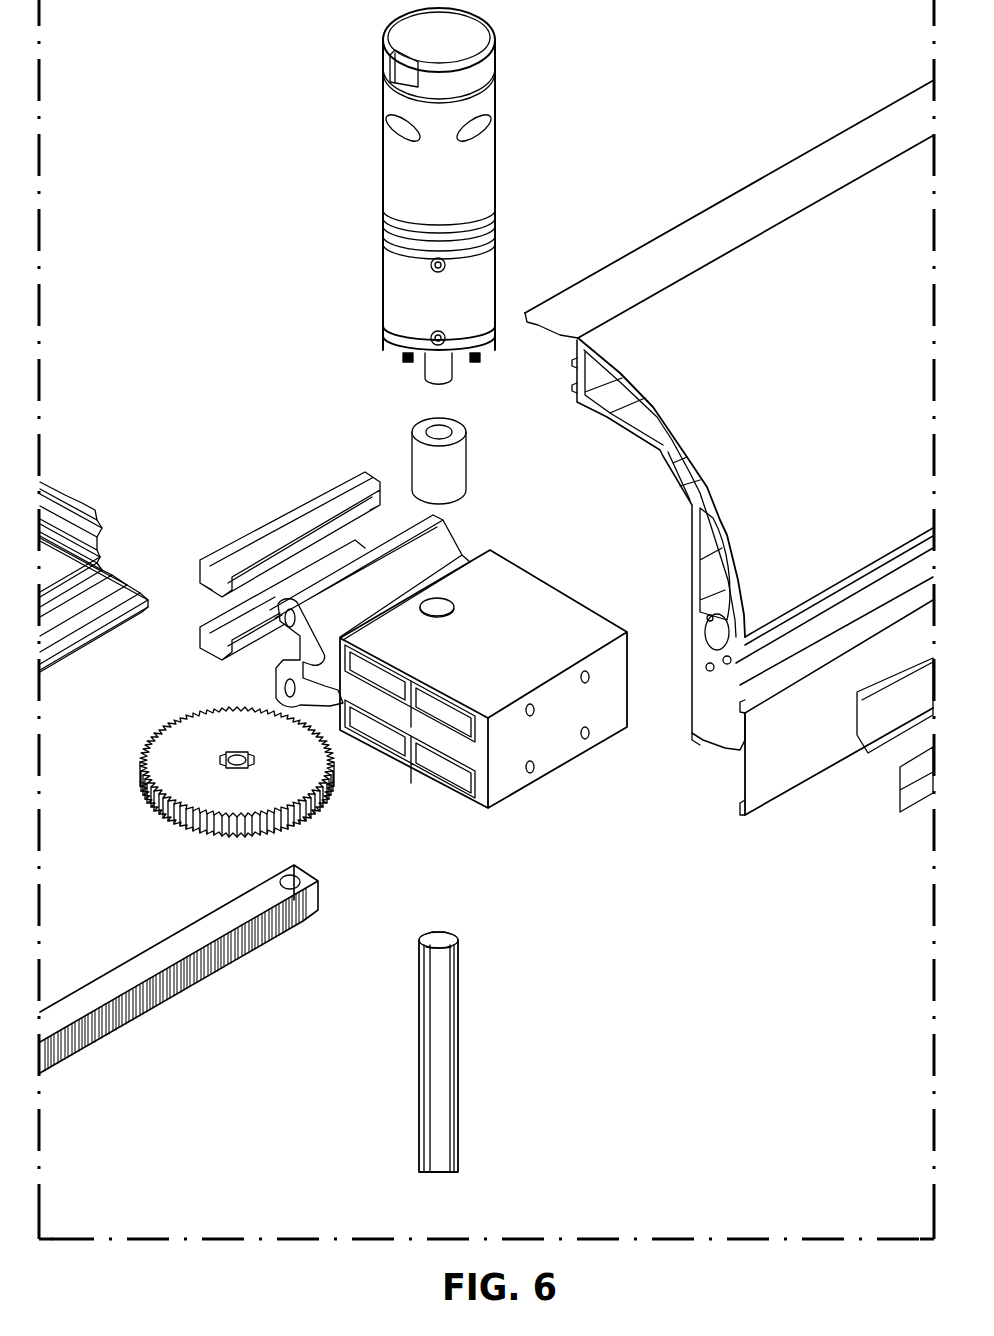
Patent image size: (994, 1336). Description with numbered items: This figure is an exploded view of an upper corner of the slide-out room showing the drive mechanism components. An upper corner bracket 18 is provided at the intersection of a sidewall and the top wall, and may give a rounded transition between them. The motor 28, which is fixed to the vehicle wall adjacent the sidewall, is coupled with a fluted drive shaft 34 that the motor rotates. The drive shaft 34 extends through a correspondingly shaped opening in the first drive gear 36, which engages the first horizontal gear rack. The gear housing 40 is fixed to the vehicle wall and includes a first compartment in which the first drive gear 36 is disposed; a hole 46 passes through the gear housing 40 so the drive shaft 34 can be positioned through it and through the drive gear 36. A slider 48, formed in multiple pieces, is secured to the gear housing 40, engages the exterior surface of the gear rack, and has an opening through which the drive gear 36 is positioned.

The first or upper corner bracket 18 is at (808, 255).
The motor 28 is at (457, 80).
The fluted motor shaft or drive shaft 34 is at (442, 1157).
The first drive gear 36 is at (168, 750).
The gear housing 40 is at (529, 686).
The hole 46 is at (455, 607).
The slider 48 is at (258, 452).